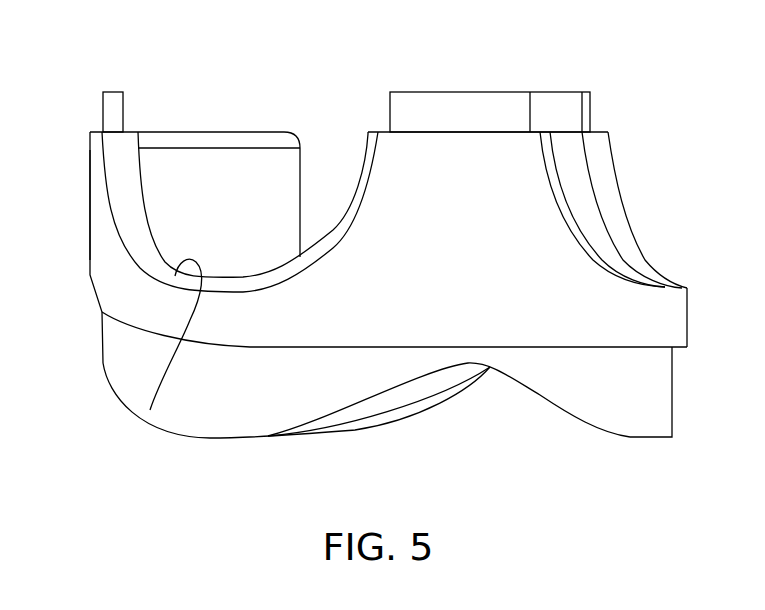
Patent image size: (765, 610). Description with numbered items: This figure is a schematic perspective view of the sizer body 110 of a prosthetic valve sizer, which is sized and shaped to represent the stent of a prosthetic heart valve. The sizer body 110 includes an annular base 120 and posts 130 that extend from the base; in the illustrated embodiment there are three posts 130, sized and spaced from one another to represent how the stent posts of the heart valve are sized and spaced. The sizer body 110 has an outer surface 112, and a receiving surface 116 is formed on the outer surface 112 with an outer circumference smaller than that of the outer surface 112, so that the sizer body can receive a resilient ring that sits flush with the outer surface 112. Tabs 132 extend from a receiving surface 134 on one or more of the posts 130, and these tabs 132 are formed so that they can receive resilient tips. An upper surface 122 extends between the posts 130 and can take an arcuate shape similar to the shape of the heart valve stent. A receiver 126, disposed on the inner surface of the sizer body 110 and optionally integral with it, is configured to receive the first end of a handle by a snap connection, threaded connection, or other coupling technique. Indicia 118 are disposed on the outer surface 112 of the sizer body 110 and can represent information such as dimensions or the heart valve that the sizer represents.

The sizer body 110 is at (56, 311).
The outer surface 112 is at (90, 250).
The receiving surface 116 is at (673, 373).
The indicia 118 is at (90, 172).
The annular base 120 is at (598, 428).
The upper surface 122 is at (150, 410).
The receiver 126 is at (233, 132).
The posts 130 is at (370, 147).
The tabs 132 is at (116, 92).
The receiving surface 134 is at (100, 130).